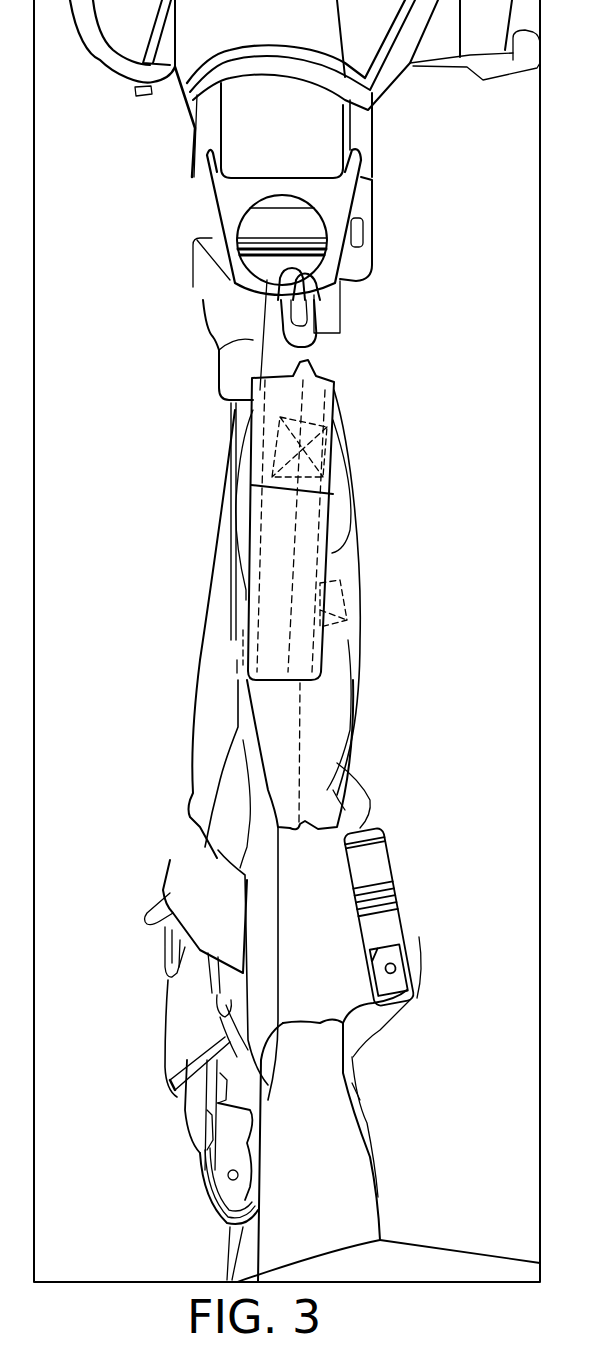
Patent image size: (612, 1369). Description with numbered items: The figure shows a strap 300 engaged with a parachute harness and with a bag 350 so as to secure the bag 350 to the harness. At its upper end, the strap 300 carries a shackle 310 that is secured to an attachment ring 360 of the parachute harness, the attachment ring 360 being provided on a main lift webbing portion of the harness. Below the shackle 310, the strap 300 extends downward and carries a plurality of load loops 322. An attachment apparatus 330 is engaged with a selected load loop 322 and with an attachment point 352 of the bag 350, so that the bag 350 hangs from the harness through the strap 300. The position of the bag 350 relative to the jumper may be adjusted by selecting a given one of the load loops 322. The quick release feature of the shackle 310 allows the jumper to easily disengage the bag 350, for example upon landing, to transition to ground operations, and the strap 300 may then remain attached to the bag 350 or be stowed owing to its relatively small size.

The strap 300 is at (249, 577).
The shackle 310 is at (253, 343).
The load loop 322 is at (280, 767).
The attachment apparatus 330 is at (260, 927).
The bag 350 is at (343, 1257).
The attachment point 352 is at (312, 1187).
The attachment ring 360 is at (233, 277).